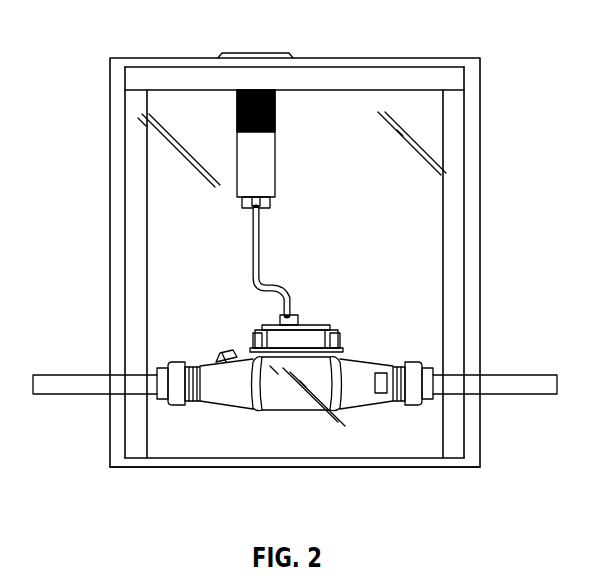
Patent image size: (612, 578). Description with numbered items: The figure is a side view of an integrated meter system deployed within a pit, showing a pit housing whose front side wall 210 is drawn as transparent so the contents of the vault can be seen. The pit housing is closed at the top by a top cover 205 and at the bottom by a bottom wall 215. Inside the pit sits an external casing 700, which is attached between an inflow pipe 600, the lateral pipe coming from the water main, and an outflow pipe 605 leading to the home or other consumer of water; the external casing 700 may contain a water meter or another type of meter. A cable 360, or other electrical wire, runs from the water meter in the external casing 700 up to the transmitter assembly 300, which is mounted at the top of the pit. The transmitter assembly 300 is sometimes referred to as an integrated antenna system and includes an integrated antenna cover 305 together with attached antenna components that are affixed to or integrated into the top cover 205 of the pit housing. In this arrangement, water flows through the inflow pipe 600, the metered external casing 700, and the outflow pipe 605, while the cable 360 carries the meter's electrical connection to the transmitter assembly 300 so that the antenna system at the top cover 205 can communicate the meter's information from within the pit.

The top cover of pit housing 205 is at (462, 60).
The side wall of pit housing 210 is at (398, 249).
The bottom wall of pit housing 215 is at (418, 468).
The transmitter assembly 300 is at (284, 132).
The integrated antenna cover 305 is at (255, 52).
The cable 360 is at (253, 246).
The inflow pipe 600 is at (495, 375).
The outflow pipe 605 is at (95, 375).
The external casing 700 is at (265, 398).